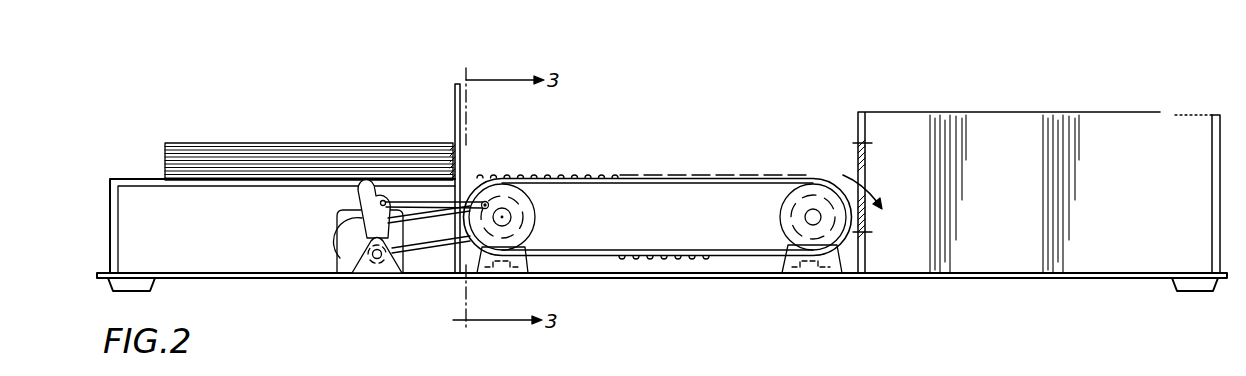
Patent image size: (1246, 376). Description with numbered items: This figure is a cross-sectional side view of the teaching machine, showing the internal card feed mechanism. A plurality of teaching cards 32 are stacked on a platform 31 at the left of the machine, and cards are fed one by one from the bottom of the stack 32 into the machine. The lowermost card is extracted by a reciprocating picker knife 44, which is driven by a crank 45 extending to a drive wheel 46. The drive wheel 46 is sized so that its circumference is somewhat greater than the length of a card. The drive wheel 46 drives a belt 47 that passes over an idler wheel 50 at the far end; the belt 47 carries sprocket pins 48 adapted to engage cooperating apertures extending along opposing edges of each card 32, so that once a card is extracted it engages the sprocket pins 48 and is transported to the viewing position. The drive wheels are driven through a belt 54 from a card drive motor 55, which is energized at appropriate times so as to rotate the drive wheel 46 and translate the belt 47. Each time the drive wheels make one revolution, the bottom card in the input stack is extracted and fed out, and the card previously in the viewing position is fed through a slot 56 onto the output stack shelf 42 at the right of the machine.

The platform 31 is at (128, 178).
The teaching cards 32 is at (293, 142).
The output stack shelf 42 is at (1077, 274).
The reciprocating picker knife 44 is at (372, 198).
The crank 45 is at (448, 217).
The drive wheel 46 is at (537, 216).
The belt 47 is at (664, 186).
The sprocket pins 48 is at (557, 177).
The idler wheel 50 is at (793, 208).
The belt 54 is at (450, 244).
The card drive motor 55 is at (347, 217).
The slot 56 is at (865, 175).